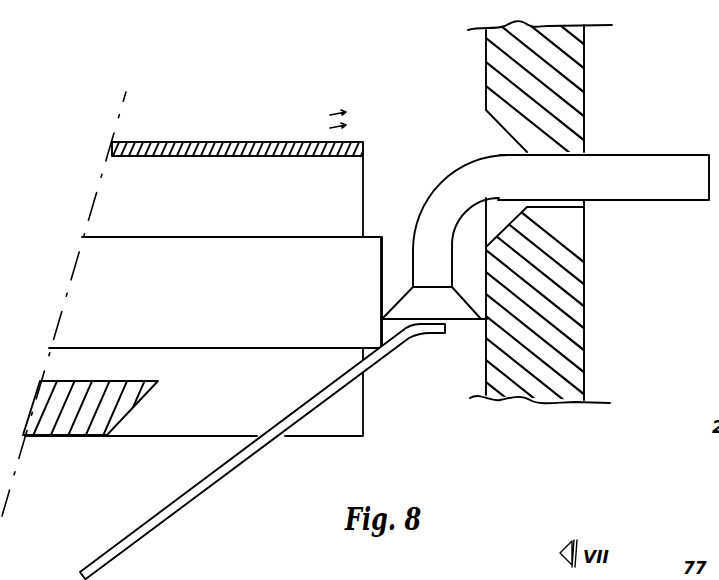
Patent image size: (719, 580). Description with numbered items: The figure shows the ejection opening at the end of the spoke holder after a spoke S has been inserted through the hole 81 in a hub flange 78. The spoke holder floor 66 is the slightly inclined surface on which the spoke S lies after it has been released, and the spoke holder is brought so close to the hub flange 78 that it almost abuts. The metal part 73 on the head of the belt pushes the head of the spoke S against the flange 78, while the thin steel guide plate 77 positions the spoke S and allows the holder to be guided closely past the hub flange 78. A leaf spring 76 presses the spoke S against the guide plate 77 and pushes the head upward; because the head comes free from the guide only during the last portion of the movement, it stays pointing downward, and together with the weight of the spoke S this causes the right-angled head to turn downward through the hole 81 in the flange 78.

The metal part 73 is at (203, 296).
The guide plate 77 is at (230, 141).
The spoke holder floor 66 is at (69, 436).
The hub flange 78 is at (584, 95).
The hole 81 is at (584, 202).
The spoke s is at (448, 190).
The leaf spring 76 is at (233, 470).